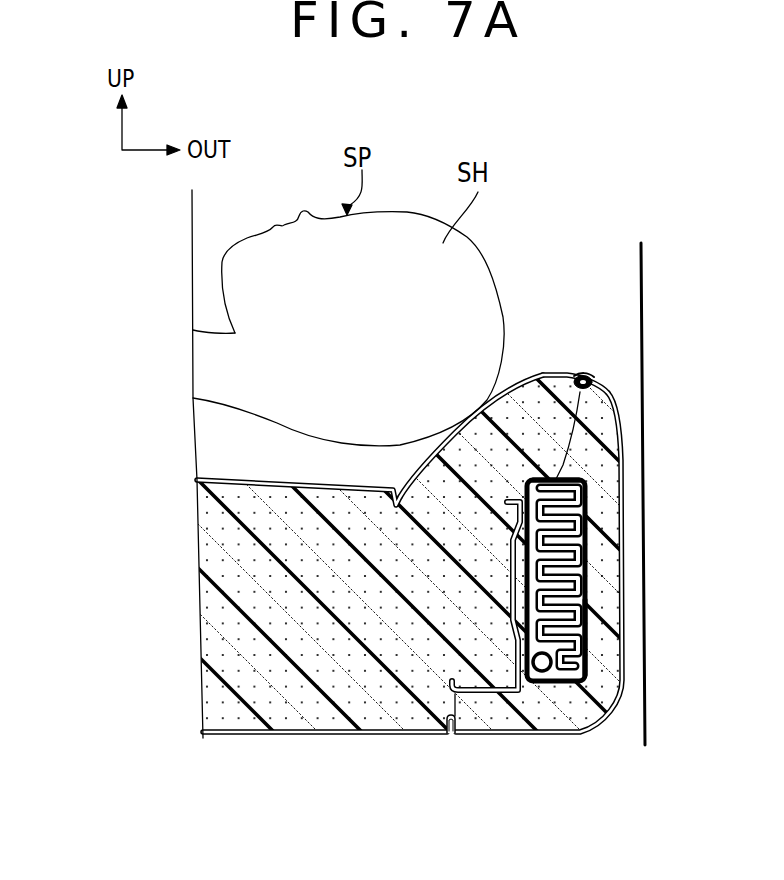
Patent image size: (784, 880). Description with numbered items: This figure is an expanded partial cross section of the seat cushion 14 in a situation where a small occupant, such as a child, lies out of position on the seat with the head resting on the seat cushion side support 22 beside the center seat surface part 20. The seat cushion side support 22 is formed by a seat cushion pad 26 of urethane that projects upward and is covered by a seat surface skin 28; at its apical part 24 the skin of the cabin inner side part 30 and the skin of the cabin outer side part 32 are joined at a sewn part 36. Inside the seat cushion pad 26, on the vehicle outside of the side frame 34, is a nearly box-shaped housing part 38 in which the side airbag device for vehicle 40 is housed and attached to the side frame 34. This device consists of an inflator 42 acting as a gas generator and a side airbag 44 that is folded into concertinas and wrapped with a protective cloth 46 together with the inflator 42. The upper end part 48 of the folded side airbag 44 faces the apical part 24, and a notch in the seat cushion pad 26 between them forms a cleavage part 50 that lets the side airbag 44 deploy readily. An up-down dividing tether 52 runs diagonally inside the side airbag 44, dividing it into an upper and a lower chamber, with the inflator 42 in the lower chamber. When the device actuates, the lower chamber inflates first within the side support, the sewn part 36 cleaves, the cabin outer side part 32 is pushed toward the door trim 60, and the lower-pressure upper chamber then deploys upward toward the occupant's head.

The seat cushion 14 is at (288, 733).
The center seat surface part 20 is at (213, 480).
The seat cushion side support 22 is at (499, 389).
The apical part 24 is at (584, 378).
The seat cushion pad 26 is at (474, 512).
The seat surface skin 28 is at (560, 373).
The cabin inner side part 30 is at (457, 432).
The cabin outer side part 32 is at (613, 430).
The side frame 34 is at (453, 737).
The sewn part 36 is at (588, 378).
The housing part 38 is at (515, 592).
The side airbag device for vehicle 40 is at (626, 650).
The inflator 42 is at (540, 670).
The side airbag 44 is at (586, 652).
The protective cloth 46 is at (586, 630).
The upper end part 48 is at (586, 480).
The cleavage part 50 is at (562, 470).
The up-down dividing tether 52 is at (586, 593).
The door trim 60 is at (642, 735).